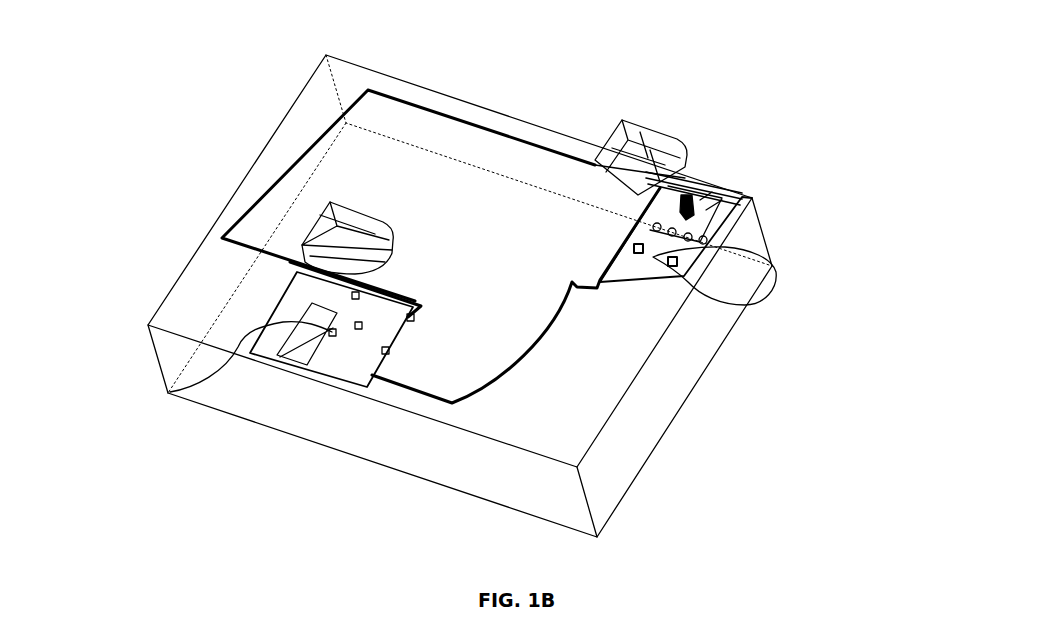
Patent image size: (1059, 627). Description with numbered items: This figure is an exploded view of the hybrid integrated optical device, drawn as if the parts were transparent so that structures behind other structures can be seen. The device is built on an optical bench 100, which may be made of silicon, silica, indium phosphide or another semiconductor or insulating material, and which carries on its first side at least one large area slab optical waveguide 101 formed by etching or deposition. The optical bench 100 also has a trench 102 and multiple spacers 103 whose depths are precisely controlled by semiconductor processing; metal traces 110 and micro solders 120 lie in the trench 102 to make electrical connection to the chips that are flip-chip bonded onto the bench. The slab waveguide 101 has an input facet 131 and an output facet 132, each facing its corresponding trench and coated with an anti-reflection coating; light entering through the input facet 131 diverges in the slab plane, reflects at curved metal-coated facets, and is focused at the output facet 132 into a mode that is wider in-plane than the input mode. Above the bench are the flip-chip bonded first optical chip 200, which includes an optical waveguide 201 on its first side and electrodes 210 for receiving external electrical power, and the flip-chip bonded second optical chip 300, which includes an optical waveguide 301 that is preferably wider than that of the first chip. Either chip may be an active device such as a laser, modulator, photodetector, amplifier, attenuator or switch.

The optical bench 100 is at (513, 467).
The large area slab optical waveguide 101 is at (497, 332).
The trench 102 is at (300, 308).
The spacers 103 is at (332, 333).
The metal traces 110 is at (752, 198).
The micro solders 120 is at (170, 392).
The input facet 131 is at (410, 310).
The output facet 132 is at (607, 283).
The first optical chip 200 is at (330, 202).
The optical waveguide 201 is at (420, 187).
The electrodes 210 is at (255, 250).
The second optical chip 300 is at (652, 143).
The optical waveguide 301 is at (690, 180).